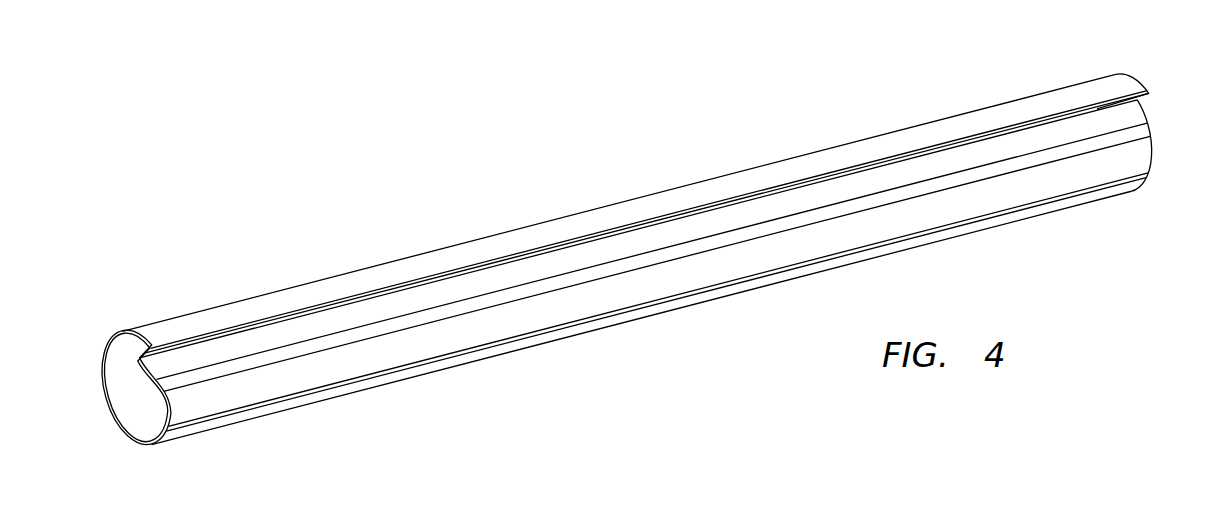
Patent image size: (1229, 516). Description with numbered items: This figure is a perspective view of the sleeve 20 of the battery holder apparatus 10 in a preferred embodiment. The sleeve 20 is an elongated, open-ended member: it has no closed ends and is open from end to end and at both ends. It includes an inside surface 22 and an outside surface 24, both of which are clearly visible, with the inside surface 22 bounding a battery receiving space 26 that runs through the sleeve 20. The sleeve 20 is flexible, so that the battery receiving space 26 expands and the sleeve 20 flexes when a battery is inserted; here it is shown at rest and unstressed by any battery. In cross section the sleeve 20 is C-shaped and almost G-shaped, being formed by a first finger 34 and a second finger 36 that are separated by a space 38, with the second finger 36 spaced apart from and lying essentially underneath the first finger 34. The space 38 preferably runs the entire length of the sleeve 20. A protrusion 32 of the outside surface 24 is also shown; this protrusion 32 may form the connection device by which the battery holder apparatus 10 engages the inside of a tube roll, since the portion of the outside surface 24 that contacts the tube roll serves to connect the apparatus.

The battery holder apparatus 10 is at (517, 98).
The sleeve 20 is at (901, 128).
The inside surface 22 is at (120, 393).
The outside surface 24 is at (312, 280).
The battery receiving space 26 is at (143, 410).
The protrusion 32 is at (1143, 167).
The first finger 34 is at (977, 120).
The second finger 36 is at (253, 340).
The space 38 is at (412, 292).